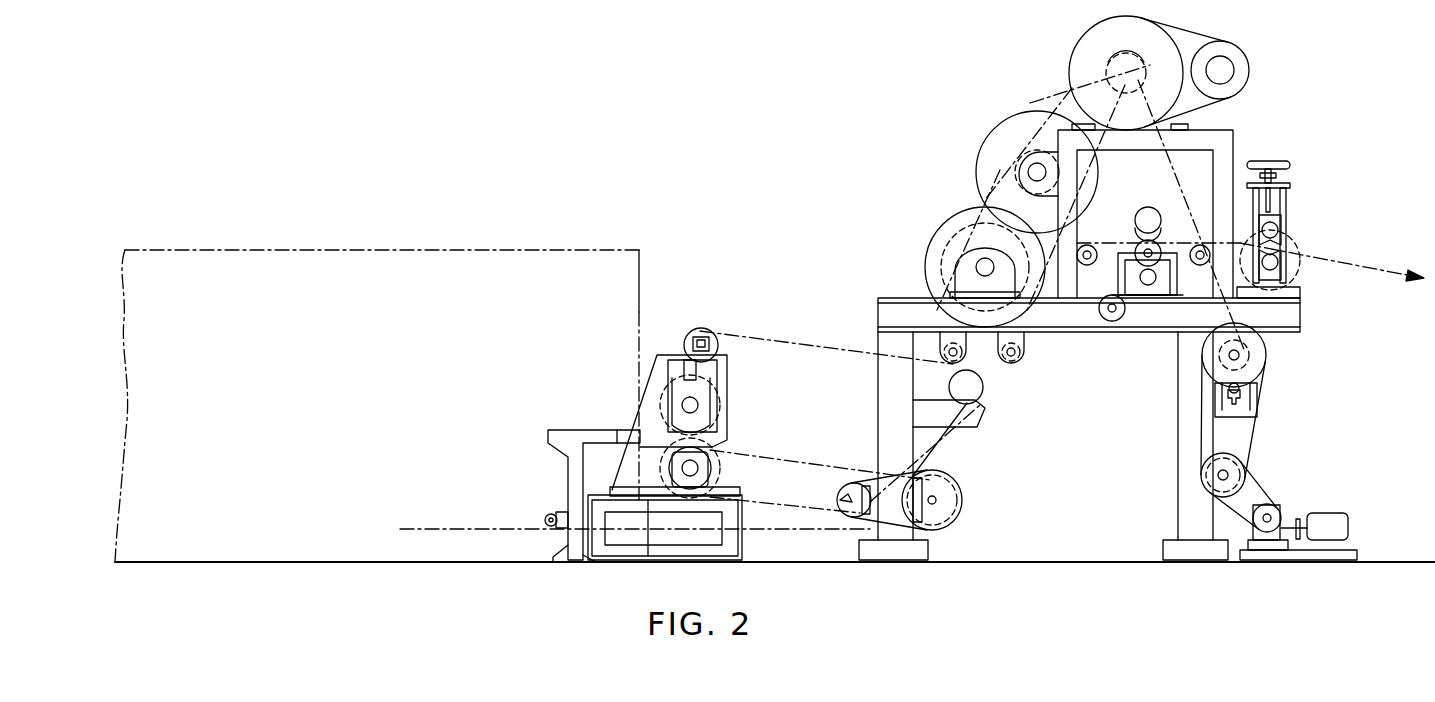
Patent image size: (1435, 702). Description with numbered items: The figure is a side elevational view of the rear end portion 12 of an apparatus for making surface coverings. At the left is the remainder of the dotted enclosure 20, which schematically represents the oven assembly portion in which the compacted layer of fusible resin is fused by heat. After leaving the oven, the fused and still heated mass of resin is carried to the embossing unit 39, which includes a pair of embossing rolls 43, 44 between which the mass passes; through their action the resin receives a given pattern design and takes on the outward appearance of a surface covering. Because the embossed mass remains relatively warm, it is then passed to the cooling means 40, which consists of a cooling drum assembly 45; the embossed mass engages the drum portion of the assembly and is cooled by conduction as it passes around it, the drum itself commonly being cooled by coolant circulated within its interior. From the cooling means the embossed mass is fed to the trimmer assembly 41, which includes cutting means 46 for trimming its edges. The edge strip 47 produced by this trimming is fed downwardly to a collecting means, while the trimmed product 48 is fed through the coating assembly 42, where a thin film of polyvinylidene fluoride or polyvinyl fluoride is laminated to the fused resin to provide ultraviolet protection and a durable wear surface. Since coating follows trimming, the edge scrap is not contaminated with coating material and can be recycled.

The rear end portion 12 is at (978, 568).
The dotted enclosure 20 is at (406, 243).
The embossing unit 39 is at (690, 409).
The cooling means 40 is at (940, 218).
The trimmer assembly 41 is at (1149, 306).
The coating assembly 42 is at (1298, 236).
The embossing roll 43 is at (660, 400).
The embossing roll 44 is at (712, 474).
The cooling drum assembly 45 is at (975, 285).
The cutting means 46 is at (1168, 242).
The edge strip 47 is at (1222, 398).
The trimmed product 48 is at (1397, 272).